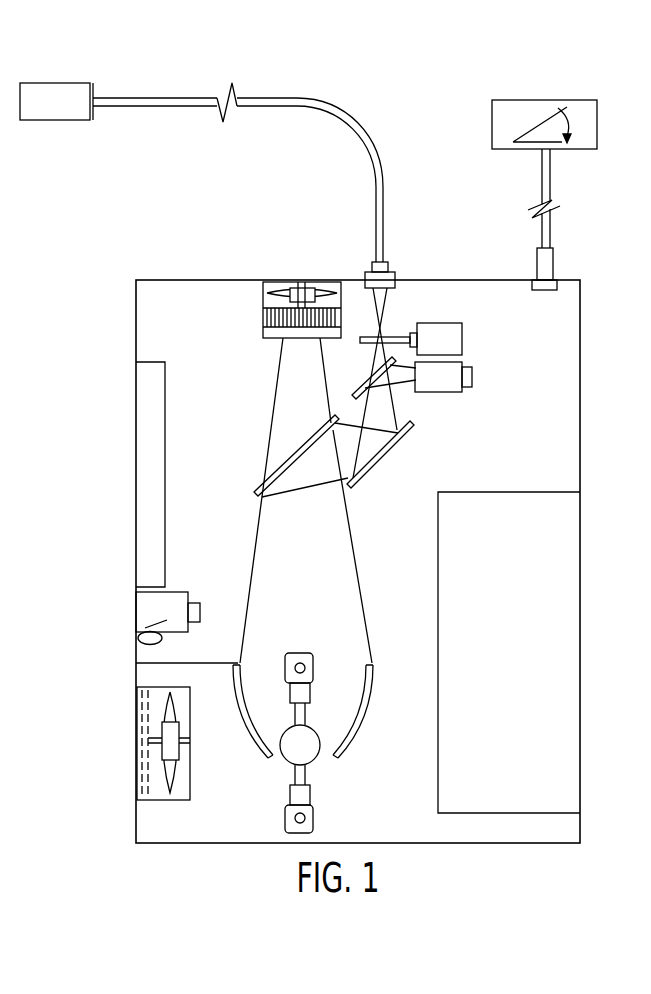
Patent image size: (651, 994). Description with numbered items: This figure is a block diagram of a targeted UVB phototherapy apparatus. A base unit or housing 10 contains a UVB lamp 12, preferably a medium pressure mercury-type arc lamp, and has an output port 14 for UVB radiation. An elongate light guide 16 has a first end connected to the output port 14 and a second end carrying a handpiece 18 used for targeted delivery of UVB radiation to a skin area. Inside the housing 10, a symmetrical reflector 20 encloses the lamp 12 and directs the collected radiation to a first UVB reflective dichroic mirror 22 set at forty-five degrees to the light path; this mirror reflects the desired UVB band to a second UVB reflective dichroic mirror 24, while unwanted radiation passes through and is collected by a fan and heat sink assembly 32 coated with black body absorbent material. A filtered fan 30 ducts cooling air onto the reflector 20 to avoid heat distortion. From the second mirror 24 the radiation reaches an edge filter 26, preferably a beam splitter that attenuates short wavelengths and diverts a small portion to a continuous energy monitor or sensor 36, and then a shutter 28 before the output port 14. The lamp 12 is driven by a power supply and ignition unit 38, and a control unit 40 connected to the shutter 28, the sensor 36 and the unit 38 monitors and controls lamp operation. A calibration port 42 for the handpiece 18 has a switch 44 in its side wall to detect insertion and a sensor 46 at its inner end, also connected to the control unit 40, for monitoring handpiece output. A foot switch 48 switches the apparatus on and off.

The housing 10 is at (533, 842).
The UVB lamp 12 is at (308, 773).
The output port 14 is at (390, 270).
The light guide 16 is at (360, 132).
The handpiece 18 is at (93, 121).
The reflector 20 is at (253, 740).
The first UVB reflective dichroic mirror 22 is at (283, 466).
The second UVB reflective dichroic mirror 24 is at (397, 440).
The edge filter 26 is at (357, 390).
The shutter 28 is at (436, 322).
The filtered fan 30 is at (136, 737).
The fan and heat sink assembly 32 is at (312, 286).
The energy monitor or sensor 36 is at (473, 385).
The power supply and ignition unit 38 is at (438, 579).
The control unit 40 is at (140, 477).
The calibration port 42 is at (140, 598).
The switch 44 is at (167, 642).
The sensor 46 is at (196, 598).
The foot switch 48 is at (540, 98).